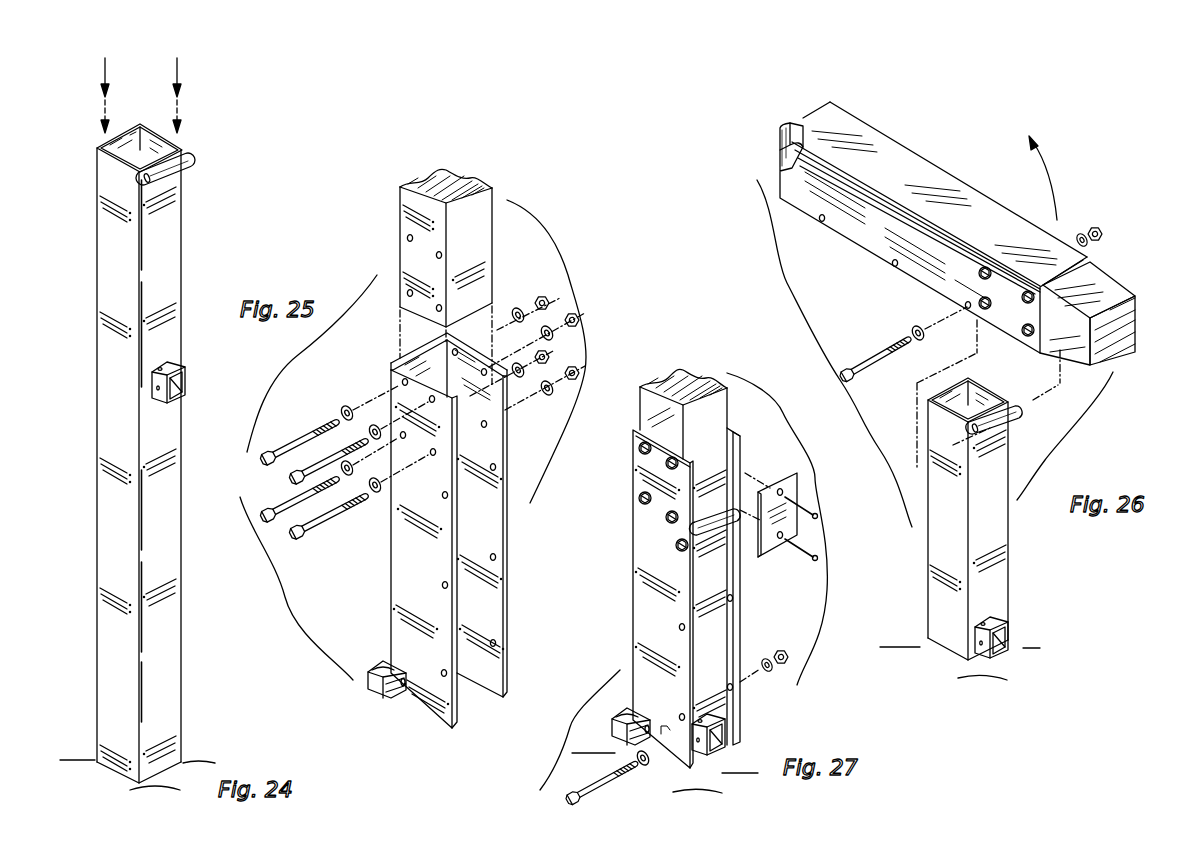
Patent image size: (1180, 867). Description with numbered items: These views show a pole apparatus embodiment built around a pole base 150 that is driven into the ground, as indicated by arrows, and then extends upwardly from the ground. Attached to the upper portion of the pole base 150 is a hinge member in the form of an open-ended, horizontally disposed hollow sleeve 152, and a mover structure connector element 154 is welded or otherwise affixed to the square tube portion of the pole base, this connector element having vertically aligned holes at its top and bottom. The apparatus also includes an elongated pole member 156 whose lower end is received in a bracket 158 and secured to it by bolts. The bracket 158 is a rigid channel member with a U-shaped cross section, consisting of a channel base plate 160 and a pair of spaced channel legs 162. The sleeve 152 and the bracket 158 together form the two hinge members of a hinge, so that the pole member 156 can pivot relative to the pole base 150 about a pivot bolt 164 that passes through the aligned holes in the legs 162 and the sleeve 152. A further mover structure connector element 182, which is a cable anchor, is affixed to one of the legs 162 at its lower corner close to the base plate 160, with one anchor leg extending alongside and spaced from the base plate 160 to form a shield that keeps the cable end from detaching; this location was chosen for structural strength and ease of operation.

In FIG. 24, the pole base 150 is at (172, 253).
In FIG. 27, the pole base 150 is at (705, 615).
In FIG. 26, the pole base 150 is at (935, 595).
In FIG. 24, the hollow sleeve 152 is at (188, 168).
In FIG. 26, the hollow sleeve 152 is at (1017, 420).
In FIG. 24, the mover structure connector element 154 is at (188, 383).
In FIG. 27, the mover structure connector element 154 is at (730, 738).
In FIG. 26, the mover structure connector element 154 is at (1012, 640).
In FIG. 25, the pole member 156 is at (485, 235).
In FIG. 25, the bracket 158 is at (490, 600).
In FIG. 27, the bracket 158 is at (642, 528).
In FIG. 26, the bracket 158 is at (915, 167).
In FIG. 25, the channel base plate 160 is at (437, 345).
In FIG. 25, the channel legs 162 is at (415, 592).
In FIG. 27, the pivot bolt 164 is at (673, 542).
In FIG. 26, the pivot bolt 164 is at (883, 353).
In FIG. 25, the mover structure connector element 182 is at (382, 690).
In FIG. 26, the mover structure connector element 182 is at (780, 150).